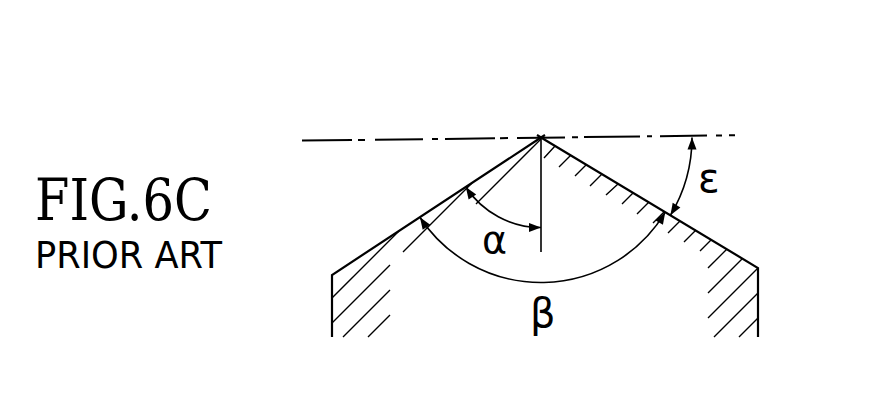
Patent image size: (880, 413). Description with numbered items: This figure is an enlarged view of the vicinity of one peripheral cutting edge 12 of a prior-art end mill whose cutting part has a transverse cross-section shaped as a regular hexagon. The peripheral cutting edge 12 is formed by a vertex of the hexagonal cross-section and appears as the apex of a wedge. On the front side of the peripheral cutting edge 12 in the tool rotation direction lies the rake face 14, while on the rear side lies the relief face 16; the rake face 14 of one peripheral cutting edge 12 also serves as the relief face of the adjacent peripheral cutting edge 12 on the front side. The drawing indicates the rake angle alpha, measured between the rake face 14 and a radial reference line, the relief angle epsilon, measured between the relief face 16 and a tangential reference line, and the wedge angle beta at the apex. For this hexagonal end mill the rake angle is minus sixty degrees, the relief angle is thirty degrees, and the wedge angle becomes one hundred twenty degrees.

The peripheral cutting edge 12 is at (542, 138).
The rake face 14 is at (368, 252).
The relief face 16 is at (704, 235).